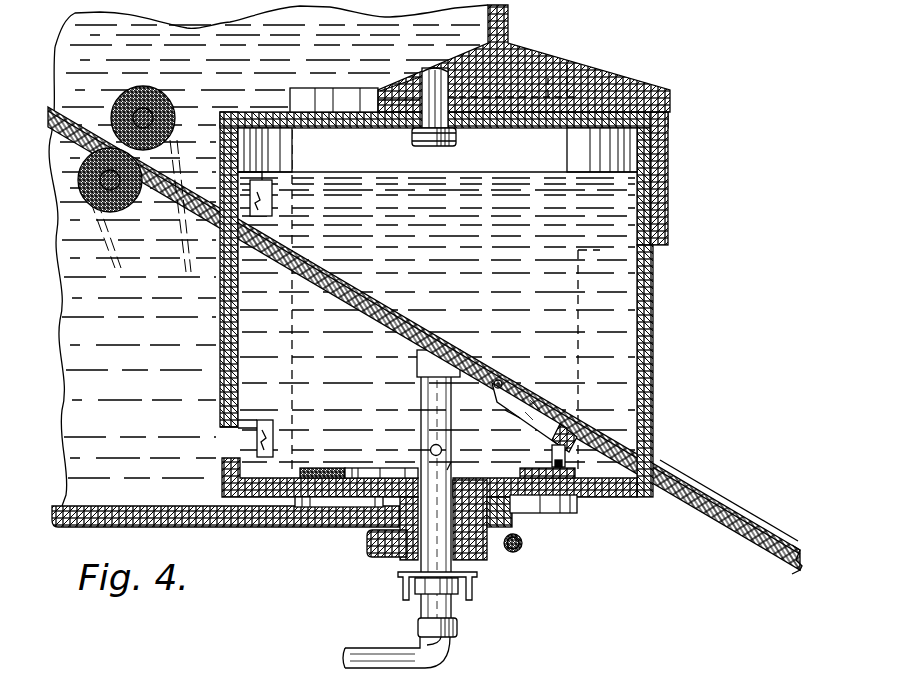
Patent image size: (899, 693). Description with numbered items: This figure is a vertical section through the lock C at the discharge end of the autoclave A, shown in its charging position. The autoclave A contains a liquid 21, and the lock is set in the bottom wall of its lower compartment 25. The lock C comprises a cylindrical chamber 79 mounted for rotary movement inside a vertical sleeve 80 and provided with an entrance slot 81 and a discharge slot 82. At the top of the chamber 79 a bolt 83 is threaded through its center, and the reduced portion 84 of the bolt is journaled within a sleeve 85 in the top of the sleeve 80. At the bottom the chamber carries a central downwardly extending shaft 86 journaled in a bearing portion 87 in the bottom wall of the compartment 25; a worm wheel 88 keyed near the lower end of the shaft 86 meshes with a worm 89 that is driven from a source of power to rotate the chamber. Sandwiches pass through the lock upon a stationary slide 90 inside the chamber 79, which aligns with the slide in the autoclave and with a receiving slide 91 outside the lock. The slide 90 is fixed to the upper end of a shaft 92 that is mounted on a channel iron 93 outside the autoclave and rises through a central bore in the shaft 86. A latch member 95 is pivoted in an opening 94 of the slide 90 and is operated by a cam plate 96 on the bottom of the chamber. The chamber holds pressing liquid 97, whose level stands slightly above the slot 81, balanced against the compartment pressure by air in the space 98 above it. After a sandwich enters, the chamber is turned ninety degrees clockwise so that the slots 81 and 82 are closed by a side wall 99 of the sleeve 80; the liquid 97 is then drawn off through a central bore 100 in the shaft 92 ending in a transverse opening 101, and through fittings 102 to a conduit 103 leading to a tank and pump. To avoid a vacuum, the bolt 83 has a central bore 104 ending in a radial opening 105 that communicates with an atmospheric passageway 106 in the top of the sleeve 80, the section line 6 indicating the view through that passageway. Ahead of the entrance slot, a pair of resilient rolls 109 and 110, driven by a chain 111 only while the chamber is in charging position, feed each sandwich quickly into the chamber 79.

The liquid 21 is at (78, 300).
The lower compartment 25 is at (46, 504).
The cylindrical chamber 79 is at (653, 266).
The vertical sleeve 80 is at (656, 152).
The entrance slot 81 is at (276, 206).
The discharge slot 82 is at (276, 436).
The bolt 83 is at (458, 138).
The reduced portion 84 is at (424, 77).
The sleeve 85 is at (392, 100).
The shaft 86 is at (462, 562).
The bearing portion 87 is at (512, 512).
The worm wheel 88 is at (384, 557).
The worm 89 is at (524, 543).
The stationary slide 90 is at (384, 326).
The receiving slide 91 is at (738, 512).
The shaft 92 is at (428, 388).
The channel iron 93 is at (478, 584).
The opening 94 is at (540, 398).
The latch member 95 is at (522, 420).
The cam plate 96 is at (328, 470).
The pressing liquid 97 is at (246, 299).
The space 98 is at (290, 140).
The side wall 99 is at (234, 334).
The central bore 100 is at (455, 462).
The transverse opening 101 is at (428, 450).
The fittings 102 is at (460, 625).
The conduit 103 is at (386, 650).
The central bore 104 is at (414, 140).
The radial opening 105 is at (436, 66).
The passageway 106 is at (560, 72).
The roll 109 is at (155, 100).
The roll 110 is at (93, 196).
The chain 111 is at (172, 153).
The autoclave A is at (500, 34).
The lock C is at (652, 326).
The section line 6 is at (357, 93).